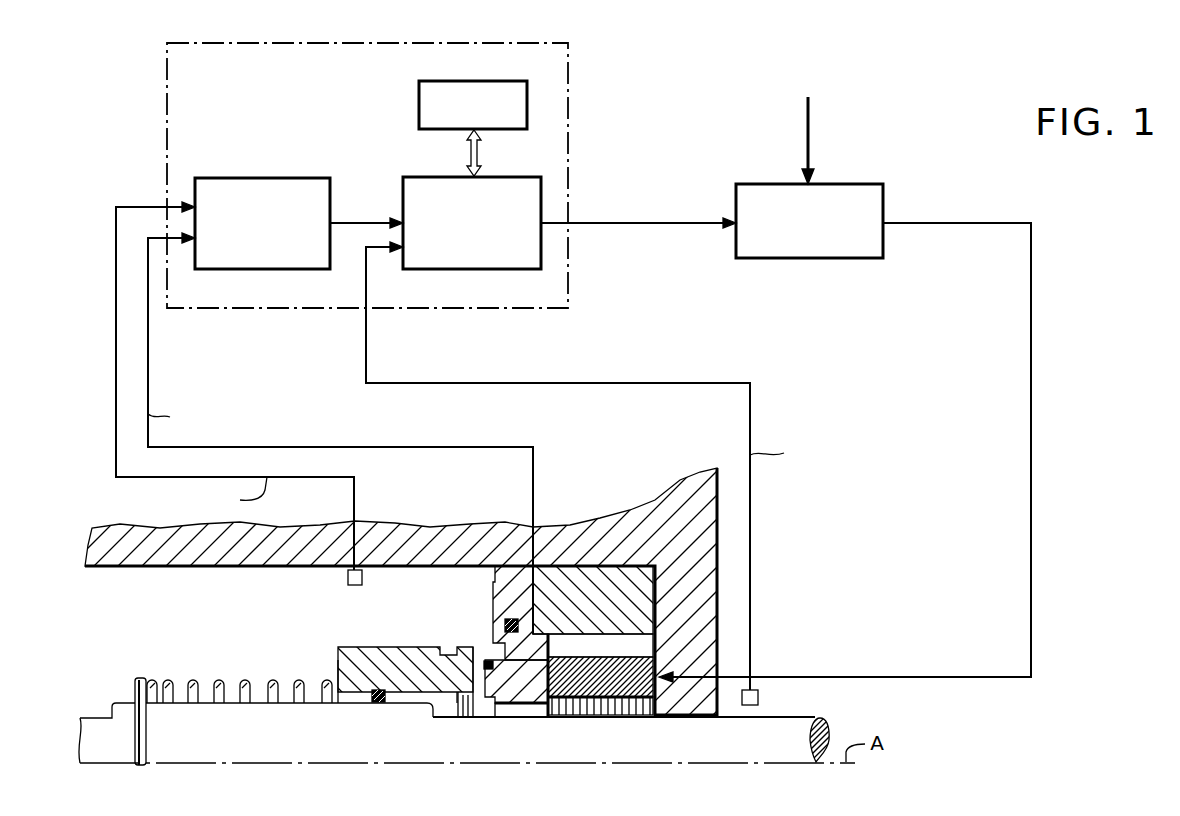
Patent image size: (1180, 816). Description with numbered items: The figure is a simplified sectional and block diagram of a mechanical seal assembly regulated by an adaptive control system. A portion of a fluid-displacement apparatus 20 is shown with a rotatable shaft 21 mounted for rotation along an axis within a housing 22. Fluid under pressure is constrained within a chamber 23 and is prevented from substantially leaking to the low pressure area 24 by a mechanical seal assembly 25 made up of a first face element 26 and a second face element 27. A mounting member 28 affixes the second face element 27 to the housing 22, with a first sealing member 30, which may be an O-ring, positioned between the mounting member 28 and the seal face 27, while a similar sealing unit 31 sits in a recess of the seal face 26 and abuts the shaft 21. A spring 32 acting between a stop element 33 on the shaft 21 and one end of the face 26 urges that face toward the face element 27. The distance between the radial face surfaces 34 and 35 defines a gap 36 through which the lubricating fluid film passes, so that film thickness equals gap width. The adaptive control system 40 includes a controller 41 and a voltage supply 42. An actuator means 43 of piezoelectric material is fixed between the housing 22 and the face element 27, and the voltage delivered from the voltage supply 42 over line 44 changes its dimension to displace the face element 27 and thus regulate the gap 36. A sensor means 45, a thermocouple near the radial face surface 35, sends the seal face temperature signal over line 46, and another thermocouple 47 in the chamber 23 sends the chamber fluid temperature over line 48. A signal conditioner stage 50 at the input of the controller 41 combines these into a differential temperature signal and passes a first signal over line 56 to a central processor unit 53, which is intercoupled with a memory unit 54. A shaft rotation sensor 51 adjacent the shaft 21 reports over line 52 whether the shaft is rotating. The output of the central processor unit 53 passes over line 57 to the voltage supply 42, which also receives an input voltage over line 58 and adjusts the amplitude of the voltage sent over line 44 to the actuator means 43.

The fluid-displacement apparatus 20 is at (390, 766).
The rotatable shaft 21 is at (212, 752).
The housing 22 is at (695, 486).
The chamber 23 is at (178, 627).
The low pressure area 24 is at (545, 722).
The mechanical seal assembly 25 is at (376, 636).
The first face element 26 is at (352, 648).
The second face element 27 is at (492, 640).
The mounting member 28 is at (497, 577).
The first sealing member 30 is at (512, 619).
The sealing unit 31 is at (378, 703).
The spring 32 is at (190, 677).
The stop element 33 is at (133, 690).
The radial face surface 34 is at (533, 712).
The radial face surface 35 is at (466, 718).
The gap 36 is at (458, 647).
The adaptive control system 40 is at (741, 171).
The controller 41 is at (568, 295).
The voltage supply 42 is at (853, 183).
The actuator means 43 is at (588, 700).
The line 44 is at (1031, 373).
The sensor means 45 is at (491, 669).
The line 46 is at (433, 447).
The thermocouple 47 is at (348, 579).
The line 48 is at (355, 493).
The signal conditioner stage 50 is at (240, 178).
The sensor 51 is at (758, 700).
The line 52 is at (750, 553).
The central processor unit 53 is at (436, 177).
The memory unit 54 is at (419, 106).
The line 56 is at (360, 222).
The line 57 is at (647, 224).
The line 58 is at (808, 143).